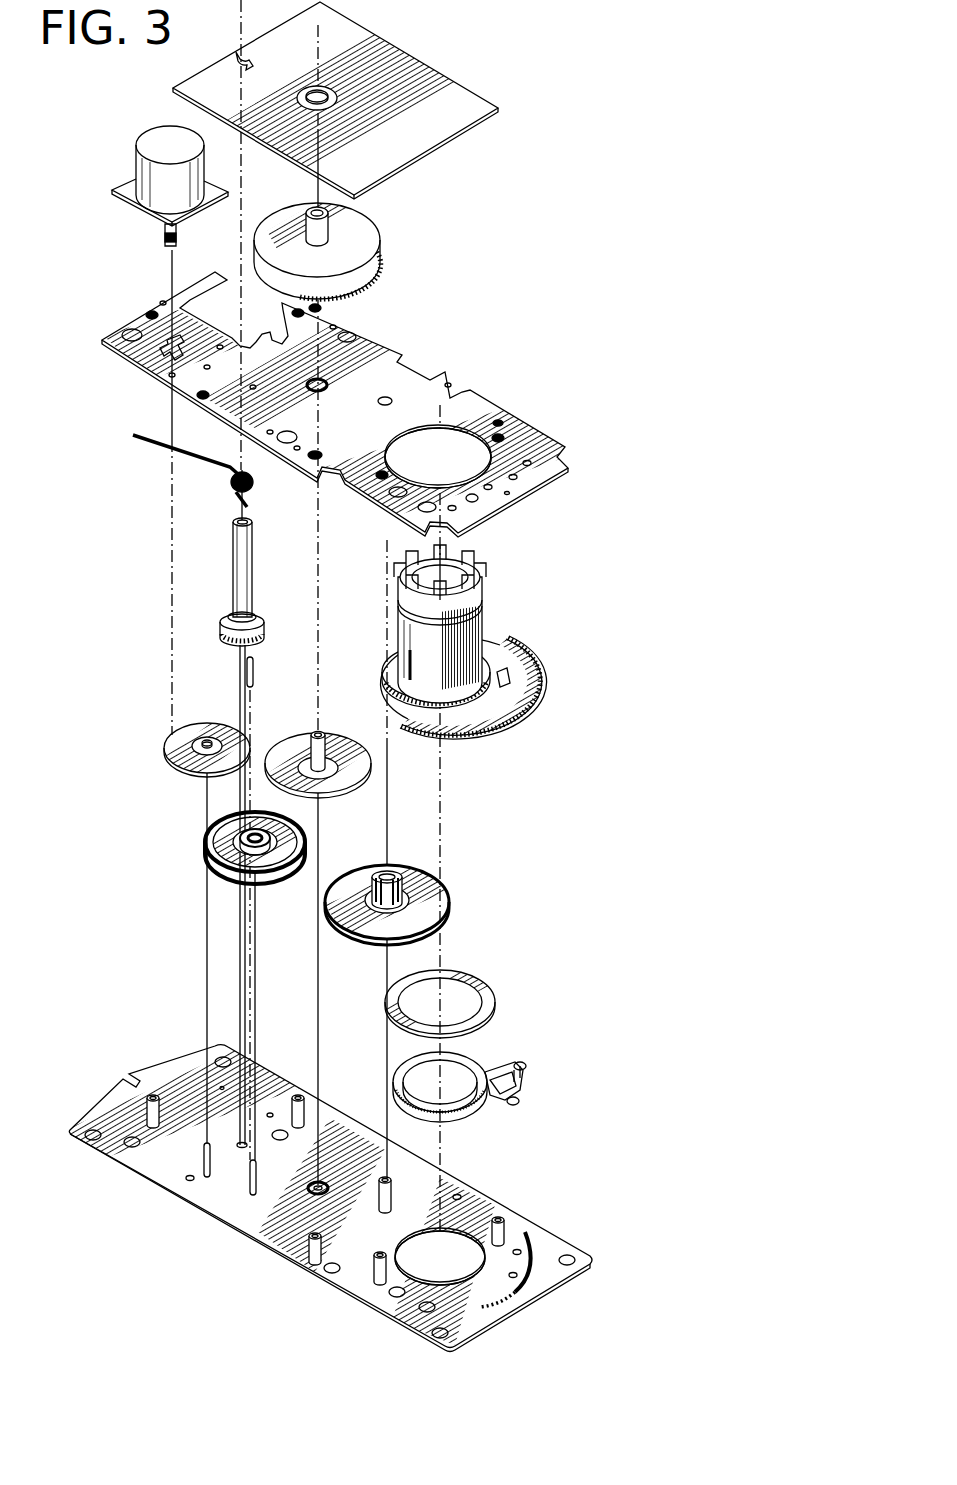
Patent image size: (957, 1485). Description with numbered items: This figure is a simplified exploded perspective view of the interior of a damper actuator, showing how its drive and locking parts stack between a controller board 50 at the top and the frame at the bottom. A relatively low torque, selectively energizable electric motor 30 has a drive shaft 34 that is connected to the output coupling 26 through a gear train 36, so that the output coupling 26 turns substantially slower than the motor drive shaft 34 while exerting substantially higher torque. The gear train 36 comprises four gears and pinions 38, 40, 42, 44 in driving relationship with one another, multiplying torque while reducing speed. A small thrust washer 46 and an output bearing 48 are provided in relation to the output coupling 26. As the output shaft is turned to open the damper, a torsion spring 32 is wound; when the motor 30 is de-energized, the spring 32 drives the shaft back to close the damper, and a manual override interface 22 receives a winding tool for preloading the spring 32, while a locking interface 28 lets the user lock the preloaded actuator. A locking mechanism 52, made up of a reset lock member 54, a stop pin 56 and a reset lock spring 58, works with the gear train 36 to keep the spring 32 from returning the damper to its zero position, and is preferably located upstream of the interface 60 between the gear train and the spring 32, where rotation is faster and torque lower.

The manual override interface 22 is at (330, 232).
The output coupling 26 is at (482, 590).
The locking interface 28 is at (253, 520).
The electric motor 30 is at (135, 148).
The torsion spring 32 is at (372, 283).
The drive shaft 34 is at (165, 228).
The gear train 36 is at (518, 792).
The gear and pinion 38 is at (200, 735).
The gear and pinion 40 is at (205, 842).
The gear and pinion 42 is at (338, 752).
The gear and pinion 44 is at (430, 890).
The thrust washer 46 is at (490, 988).
The output bearing 48 is at (482, 1070).
The controller board 50 is at (443, 88).
The locking mechanism 52 is at (175, 583).
The reset lock member 54 is at (258, 576).
The stop pin 56 is at (257, 673).
The reset lock spring 58 is at (230, 486).
The interface 60 is at (308, 748).